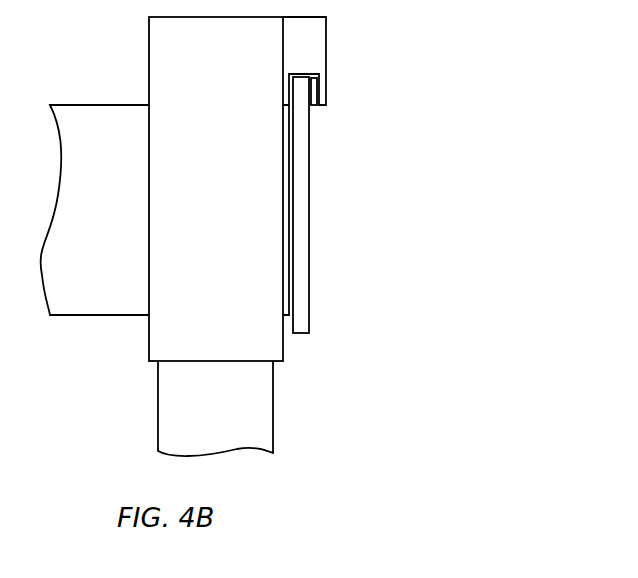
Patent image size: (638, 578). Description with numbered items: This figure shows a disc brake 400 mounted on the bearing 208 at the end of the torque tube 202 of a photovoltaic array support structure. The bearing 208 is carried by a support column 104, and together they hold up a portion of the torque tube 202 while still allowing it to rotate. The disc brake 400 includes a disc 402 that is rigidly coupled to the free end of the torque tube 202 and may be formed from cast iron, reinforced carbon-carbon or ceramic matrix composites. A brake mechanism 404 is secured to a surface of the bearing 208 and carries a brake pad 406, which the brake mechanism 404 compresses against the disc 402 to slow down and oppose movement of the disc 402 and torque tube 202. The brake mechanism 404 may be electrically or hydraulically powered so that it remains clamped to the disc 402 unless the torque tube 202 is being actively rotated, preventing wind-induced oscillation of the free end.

The disc brake 400 is at (437, 153).
The torque tube 202 is at (113, 218).
The bearing 208 is at (235, 218).
The support column 104 is at (232, 424).
The brake mechanism 404 is at (326, 55).
The disc 402 is at (309, 277).
The brake pad 406 is at (312, 106).